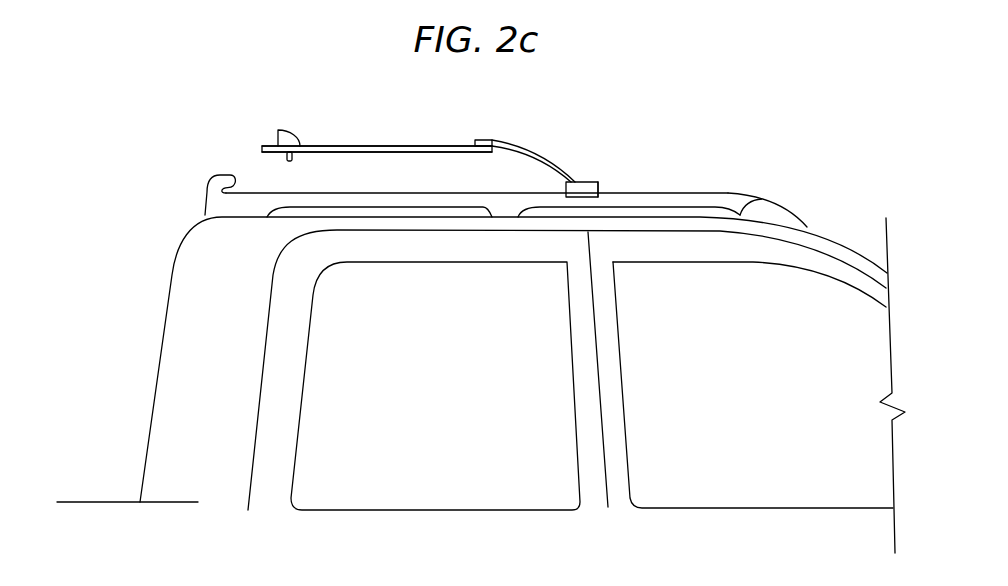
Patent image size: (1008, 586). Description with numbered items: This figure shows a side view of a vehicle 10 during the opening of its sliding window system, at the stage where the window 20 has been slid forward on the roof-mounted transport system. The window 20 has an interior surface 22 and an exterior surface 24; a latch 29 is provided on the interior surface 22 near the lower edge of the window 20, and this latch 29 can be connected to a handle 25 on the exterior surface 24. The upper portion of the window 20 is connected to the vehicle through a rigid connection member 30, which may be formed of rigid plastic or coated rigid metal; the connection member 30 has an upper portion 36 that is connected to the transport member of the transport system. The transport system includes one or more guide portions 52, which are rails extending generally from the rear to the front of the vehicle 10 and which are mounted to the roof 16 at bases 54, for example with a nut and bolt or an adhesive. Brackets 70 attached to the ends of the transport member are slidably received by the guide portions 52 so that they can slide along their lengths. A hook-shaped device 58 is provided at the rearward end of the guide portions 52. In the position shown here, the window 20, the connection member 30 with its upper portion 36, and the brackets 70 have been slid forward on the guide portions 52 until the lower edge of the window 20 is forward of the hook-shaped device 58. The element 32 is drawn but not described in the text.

The vehicle 10 is at (818, 220).
The roof 16 is at (603, 211).
The window 20 is at (343, 143).
The interior surface 22 is at (382, 156).
The exterior surface 24 is at (409, 143).
The handle 25 is at (290, 130).
The latch 29 is at (302, 160).
The connection member 30 is at (534, 141).
The tab 32 is at (478, 140).
The upper portion 36 is at (574, 181).
The guide portion 52 is at (686, 194).
The base 54 is at (245, 212).
The hook-shaped device 58 is at (223, 174).
The bracket 70 is at (594, 178).